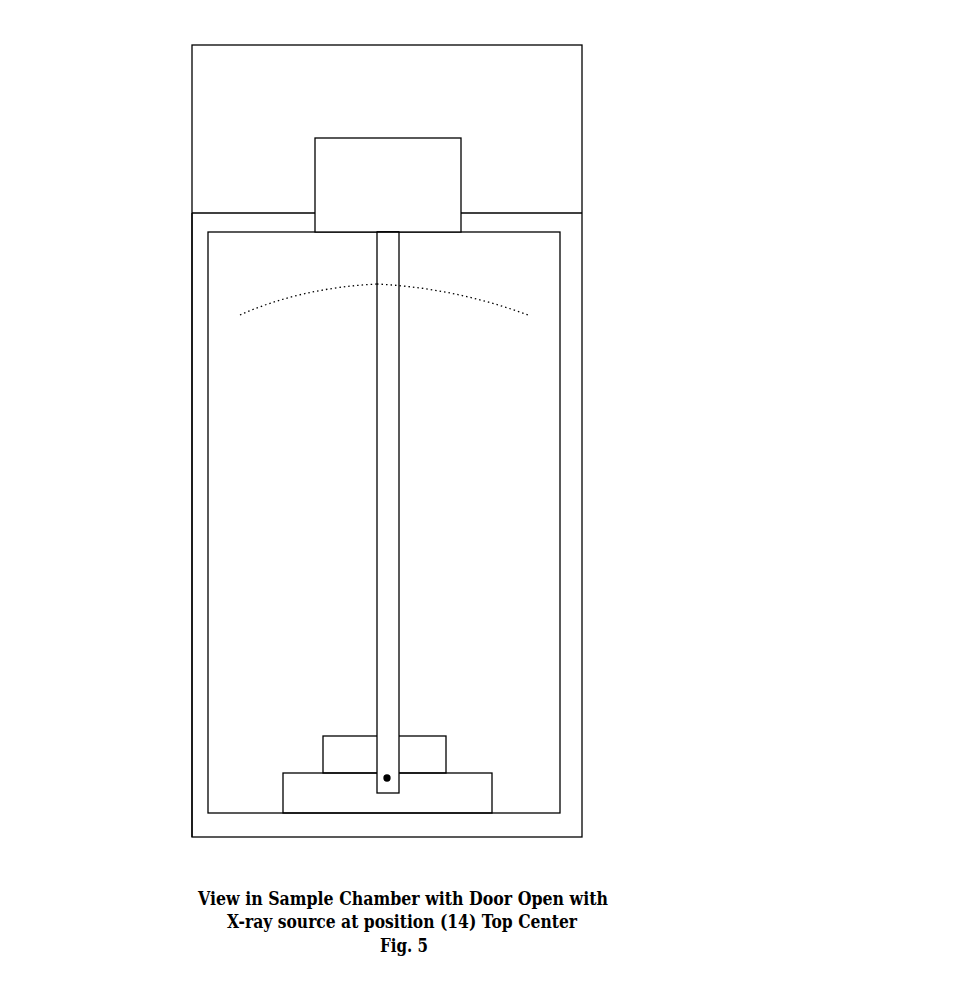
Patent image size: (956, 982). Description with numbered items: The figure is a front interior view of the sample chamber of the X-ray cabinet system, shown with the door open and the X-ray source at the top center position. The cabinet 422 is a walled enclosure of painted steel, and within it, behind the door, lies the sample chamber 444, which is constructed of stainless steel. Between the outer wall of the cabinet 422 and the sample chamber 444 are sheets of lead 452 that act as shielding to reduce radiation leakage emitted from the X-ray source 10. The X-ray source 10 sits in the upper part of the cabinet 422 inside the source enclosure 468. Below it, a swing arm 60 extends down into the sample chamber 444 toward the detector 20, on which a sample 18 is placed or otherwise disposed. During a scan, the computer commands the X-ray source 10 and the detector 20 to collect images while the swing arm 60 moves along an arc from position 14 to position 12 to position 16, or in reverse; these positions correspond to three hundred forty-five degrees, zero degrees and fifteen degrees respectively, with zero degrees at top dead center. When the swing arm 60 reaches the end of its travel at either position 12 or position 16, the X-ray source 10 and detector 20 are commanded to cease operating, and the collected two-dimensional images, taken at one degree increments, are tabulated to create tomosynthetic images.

The X-ray source 10 is at (315, 187).
The position 12 is at (299, 303).
The position 14 is at (627, 253).
The position 16 is at (462, 307).
The sample 18 is at (446, 736).
The detector 20 is at (492, 793).
The swing arm 60 is at (399, 513).
The cabinet 422 is at (192, 400).
The sample chamber 444 is at (208, 523).
The sheets of lead 452 is at (200, 625).
The source enclosure 468 is at (582, 128).